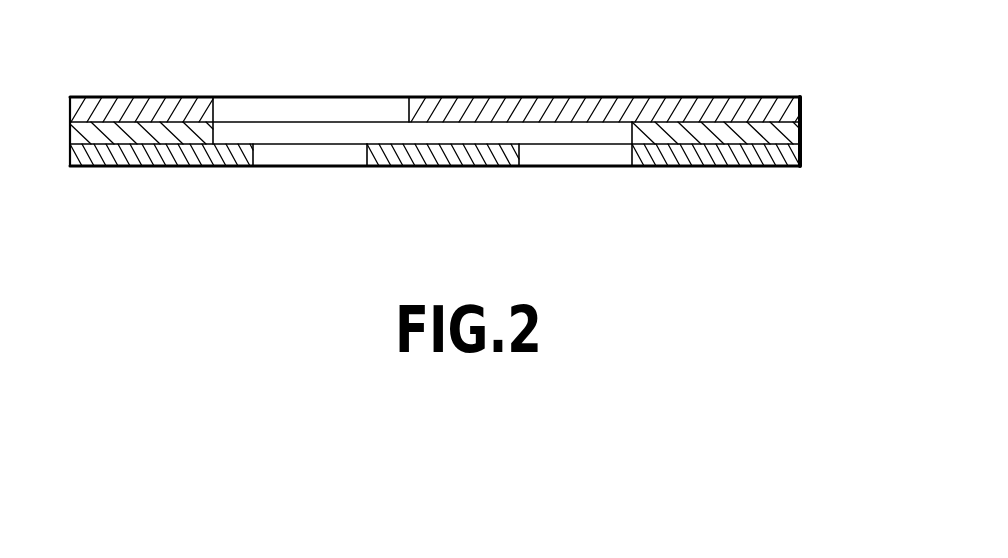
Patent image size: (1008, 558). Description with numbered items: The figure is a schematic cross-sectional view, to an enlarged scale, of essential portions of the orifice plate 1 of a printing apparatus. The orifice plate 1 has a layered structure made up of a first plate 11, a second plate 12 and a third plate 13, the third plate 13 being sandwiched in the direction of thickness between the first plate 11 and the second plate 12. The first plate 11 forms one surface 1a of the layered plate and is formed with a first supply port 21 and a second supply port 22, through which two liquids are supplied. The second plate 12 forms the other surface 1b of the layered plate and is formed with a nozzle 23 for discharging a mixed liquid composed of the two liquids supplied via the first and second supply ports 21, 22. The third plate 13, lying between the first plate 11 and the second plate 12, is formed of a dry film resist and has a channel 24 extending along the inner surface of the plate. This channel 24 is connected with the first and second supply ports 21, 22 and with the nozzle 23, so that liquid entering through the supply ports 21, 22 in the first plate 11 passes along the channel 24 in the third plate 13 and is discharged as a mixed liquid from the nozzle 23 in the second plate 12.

The orifice plate 1 is at (693, 92).
The surface 1a is at (182, 167).
The other surface 1b is at (162, 97).
The first plate 11 is at (800, 160).
The second plate 12 is at (800, 108).
The third plate 13 is at (800, 136).
The first supply port 21 is at (326, 152).
The second supply port 22 is at (580, 155).
The nozzle 23 is at (323, 110).
The channel 24 is at (507, 133).